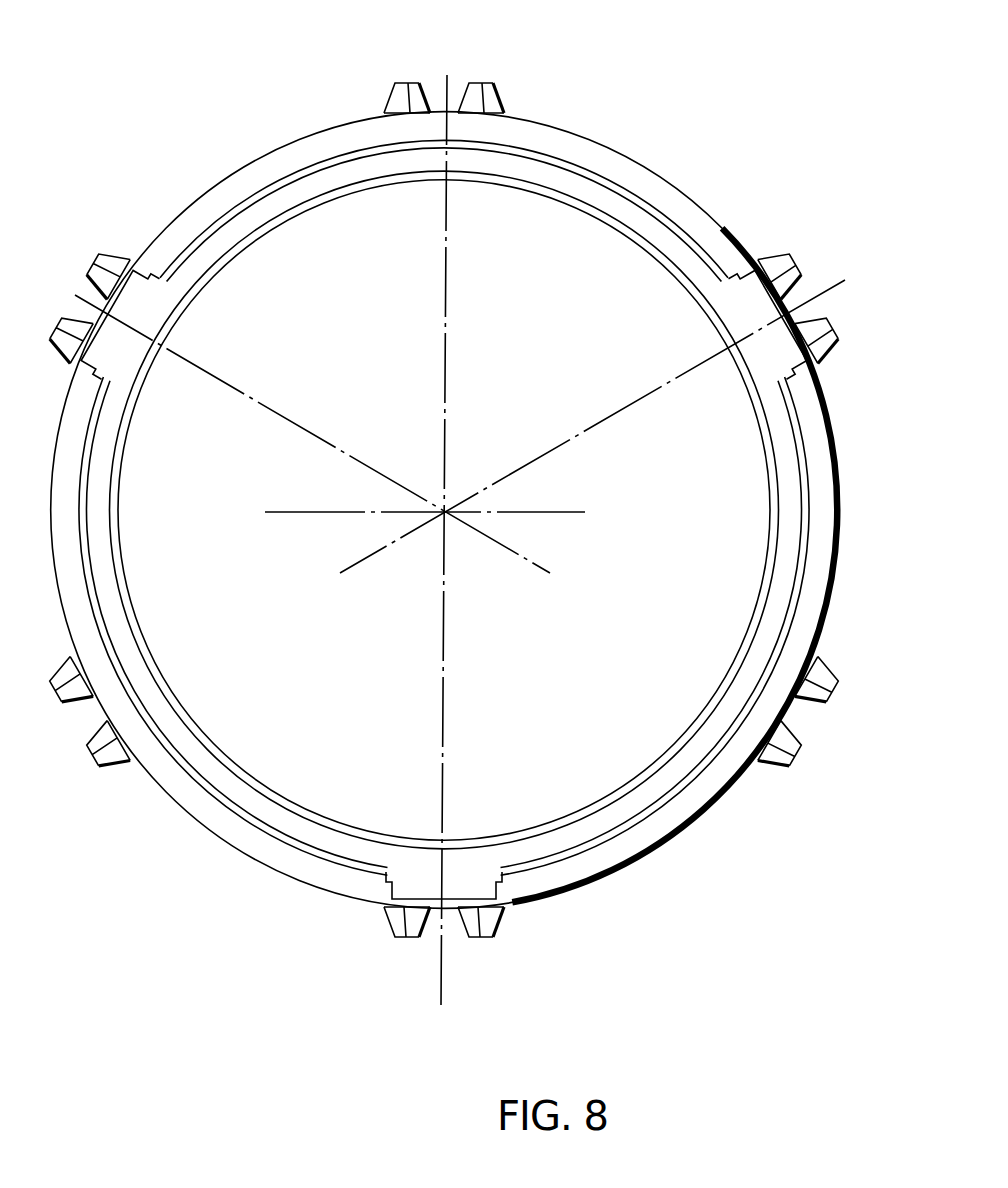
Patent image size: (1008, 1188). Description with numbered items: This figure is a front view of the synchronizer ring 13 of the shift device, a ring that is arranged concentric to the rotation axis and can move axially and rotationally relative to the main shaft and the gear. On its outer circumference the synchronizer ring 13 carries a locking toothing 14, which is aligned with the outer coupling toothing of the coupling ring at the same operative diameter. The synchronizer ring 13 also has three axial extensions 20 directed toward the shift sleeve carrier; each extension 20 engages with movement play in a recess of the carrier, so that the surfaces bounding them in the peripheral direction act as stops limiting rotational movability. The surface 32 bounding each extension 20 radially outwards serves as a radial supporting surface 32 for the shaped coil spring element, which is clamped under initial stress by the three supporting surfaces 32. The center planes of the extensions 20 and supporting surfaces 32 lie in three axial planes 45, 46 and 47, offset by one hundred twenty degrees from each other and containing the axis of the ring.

The synchronizer ring 13 is at (678, 888).
The locking toothing 14 is at (489, 75).
The axial extension 20 is at (146, 299).
The supporting surface 32 is at (111, 277).
The axial plane 45 is at (77, 266).
The axial plane 46 is at (815, 272).
The axial plane 47 is at (452, 297).